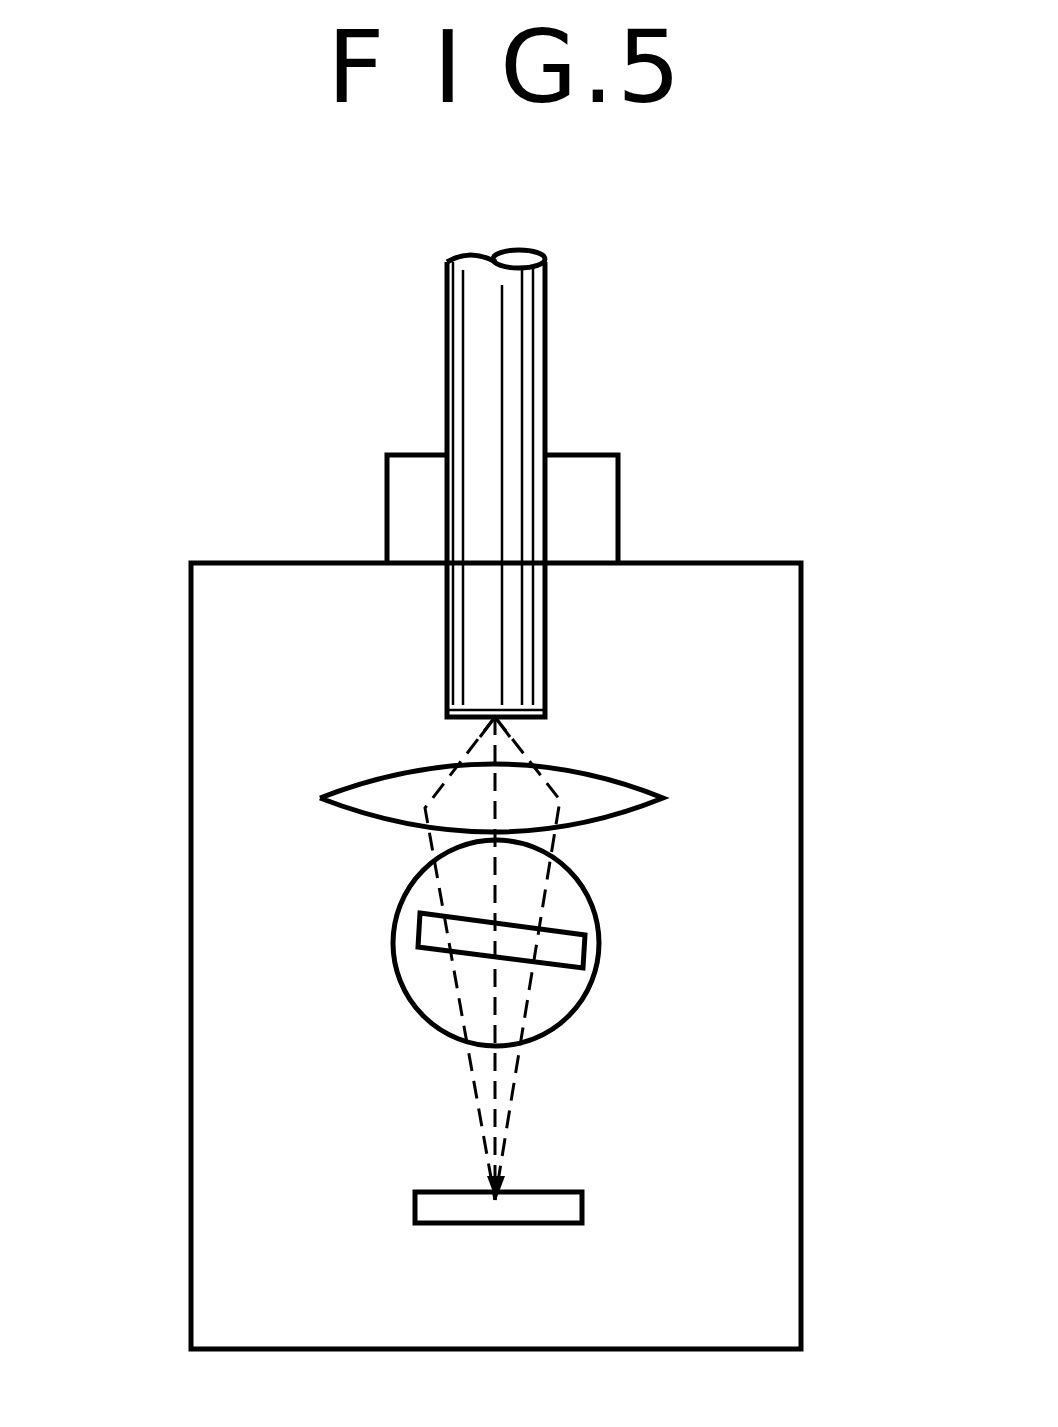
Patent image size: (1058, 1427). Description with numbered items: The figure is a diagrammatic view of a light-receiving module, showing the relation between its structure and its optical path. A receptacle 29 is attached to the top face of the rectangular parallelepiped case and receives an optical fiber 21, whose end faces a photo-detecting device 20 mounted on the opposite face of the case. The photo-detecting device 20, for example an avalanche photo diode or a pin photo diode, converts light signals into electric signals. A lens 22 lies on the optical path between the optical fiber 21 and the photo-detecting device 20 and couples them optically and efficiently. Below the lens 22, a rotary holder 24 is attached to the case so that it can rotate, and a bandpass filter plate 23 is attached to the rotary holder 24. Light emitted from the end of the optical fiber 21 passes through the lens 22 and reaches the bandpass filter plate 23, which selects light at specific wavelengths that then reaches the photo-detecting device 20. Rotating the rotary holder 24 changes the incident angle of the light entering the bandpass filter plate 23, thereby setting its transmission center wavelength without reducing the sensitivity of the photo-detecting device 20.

The photo-detecting device 20 is at (582, 1208).
The optical fiber 21 is at (523, 366).
The lens 22 is at (648, 786).
The bandpass filter plate 23 is at (603, 947).
The rotary holder 24 is at (420, 1008).
The receptacle 29 is at (600, 488).